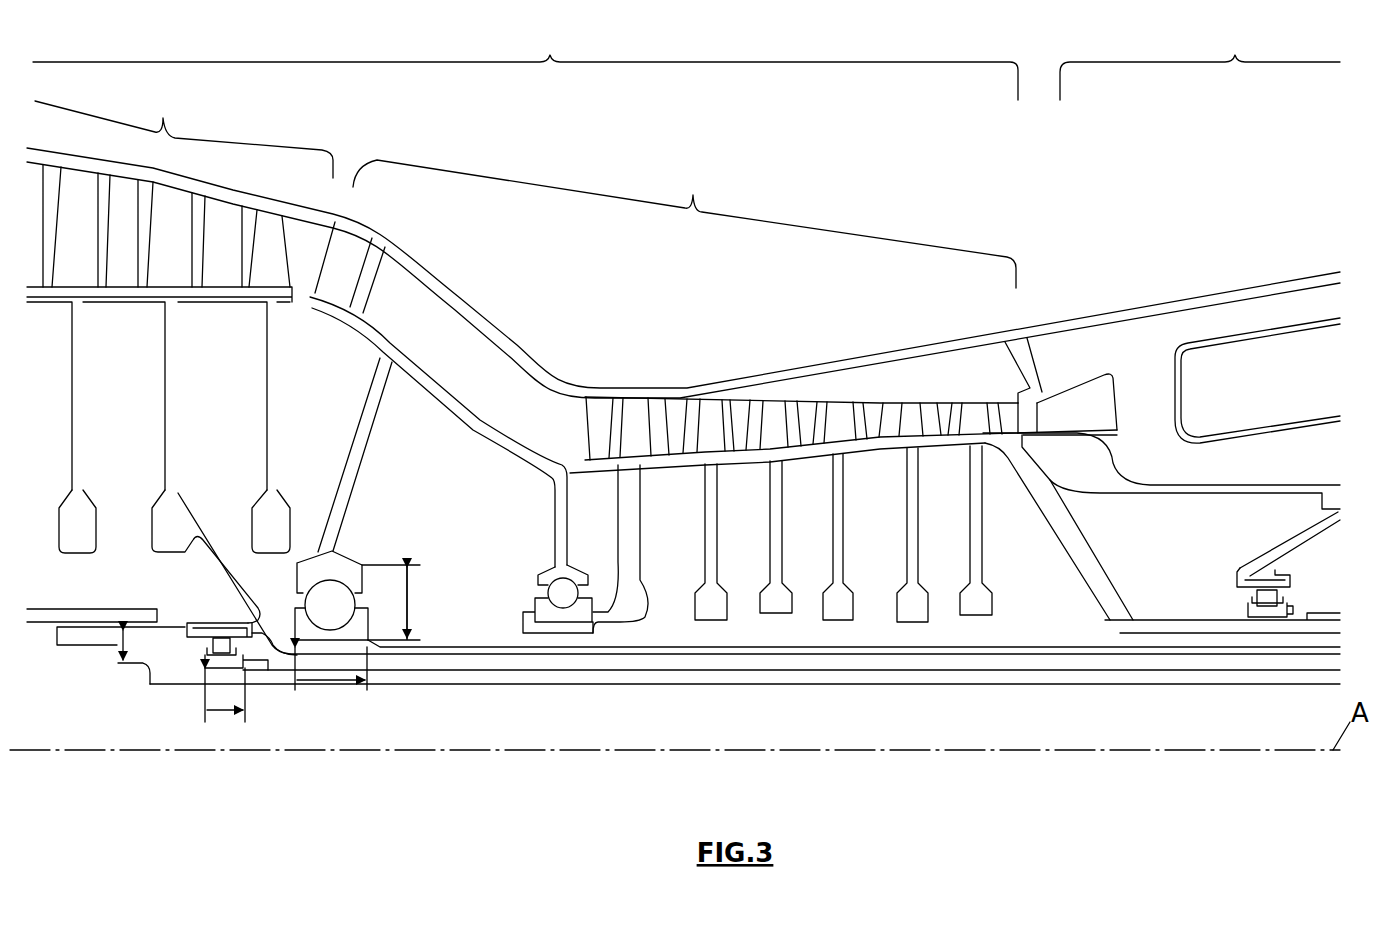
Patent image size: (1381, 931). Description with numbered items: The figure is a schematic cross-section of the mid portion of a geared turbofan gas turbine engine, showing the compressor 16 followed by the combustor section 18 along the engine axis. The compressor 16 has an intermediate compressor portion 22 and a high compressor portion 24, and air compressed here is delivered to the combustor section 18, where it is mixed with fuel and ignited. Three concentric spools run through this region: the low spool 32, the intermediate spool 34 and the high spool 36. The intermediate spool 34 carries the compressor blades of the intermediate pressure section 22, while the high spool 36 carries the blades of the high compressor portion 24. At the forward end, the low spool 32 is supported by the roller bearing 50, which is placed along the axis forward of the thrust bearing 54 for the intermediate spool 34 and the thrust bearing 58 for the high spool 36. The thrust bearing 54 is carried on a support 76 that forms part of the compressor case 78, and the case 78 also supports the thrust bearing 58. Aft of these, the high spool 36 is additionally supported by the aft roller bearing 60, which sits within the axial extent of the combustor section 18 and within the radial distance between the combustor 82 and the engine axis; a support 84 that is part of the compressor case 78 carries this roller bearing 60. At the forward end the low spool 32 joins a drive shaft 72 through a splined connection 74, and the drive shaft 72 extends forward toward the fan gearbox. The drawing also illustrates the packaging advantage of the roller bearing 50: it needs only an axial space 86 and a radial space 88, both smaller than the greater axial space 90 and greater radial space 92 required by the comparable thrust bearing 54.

The compressor 16 is at (525, 64).
The combustor section 18 is at (1200, 64).
The intermediate compressor portion 22 is at (180, 370).
The high compressor portion 24 is at (713, 396).
The low spool 32 is at (704, 675).
The intermediate spool 34 is at (633, 655).
The high spool 36 is at (1085, 578).
The roller bearing 50 is at (222, 633).
The thrust bearing 54 is at (321, 570).
The thrust bearing 58 is at (559, 636).
The aft roller bearing 60 is at (1242, 616).
The drive shaft 72 is at (43, 622).
The splined connection 74 is at (117, 627).
The support 76 is at (362, 482).
The compressor case 78 is at (568, 383).
The combustor 82 is at (1262, 365).
The support 84 is at (1275, 550).
The axial space 86 is at (233, 722).
The radial space 88 is at (123, 628).
The axial space 90 is at (340, 690).
The radial space 92 is at (420, 602).